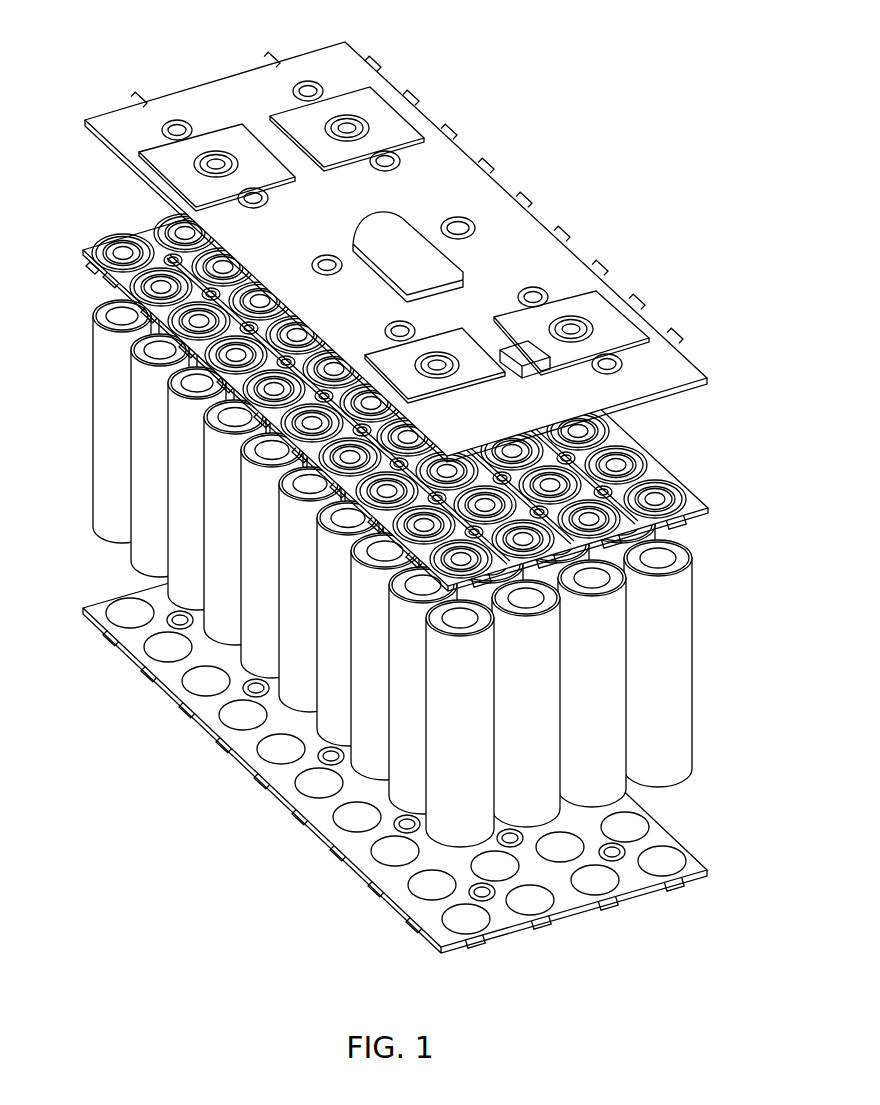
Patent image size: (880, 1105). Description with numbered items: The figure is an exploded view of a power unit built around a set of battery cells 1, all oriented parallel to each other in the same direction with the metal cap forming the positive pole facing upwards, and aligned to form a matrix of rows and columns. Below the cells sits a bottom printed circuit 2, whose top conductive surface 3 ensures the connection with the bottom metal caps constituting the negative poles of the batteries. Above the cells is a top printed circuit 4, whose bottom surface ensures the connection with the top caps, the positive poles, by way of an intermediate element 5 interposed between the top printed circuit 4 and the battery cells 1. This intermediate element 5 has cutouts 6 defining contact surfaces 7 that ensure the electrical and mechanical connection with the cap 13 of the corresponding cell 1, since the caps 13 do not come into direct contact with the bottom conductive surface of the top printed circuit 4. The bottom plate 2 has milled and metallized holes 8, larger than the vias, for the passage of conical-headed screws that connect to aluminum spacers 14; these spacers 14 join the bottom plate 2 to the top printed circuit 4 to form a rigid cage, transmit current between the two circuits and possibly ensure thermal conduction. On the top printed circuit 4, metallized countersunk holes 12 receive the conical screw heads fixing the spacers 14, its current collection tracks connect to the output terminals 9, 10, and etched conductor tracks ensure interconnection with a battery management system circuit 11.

The battery cell 1 is at (675, 683).
The bottom printed circuit 2 is at (693, 865).
The top conductive surface 3 is at (352, 858).
The top printed circuit 4 is at (683, 370).
The intermediate element 5 is at (702, 495).
The cutout 6 is at (120, 238).
The contact surface 7 is at (92, 268).
The milled and metallized hole 8 is at (322, 775).
The output terminal 9 is at (229, 144).
The output terminal 10 is at (370, 108).
The battery management system circuit 11 is at (433, 263).
The metallized countersunk hole 12 is at (463, 214).
The cap 13 is at (607, 553).
The aluminum spacer 14 is at (688, 510).